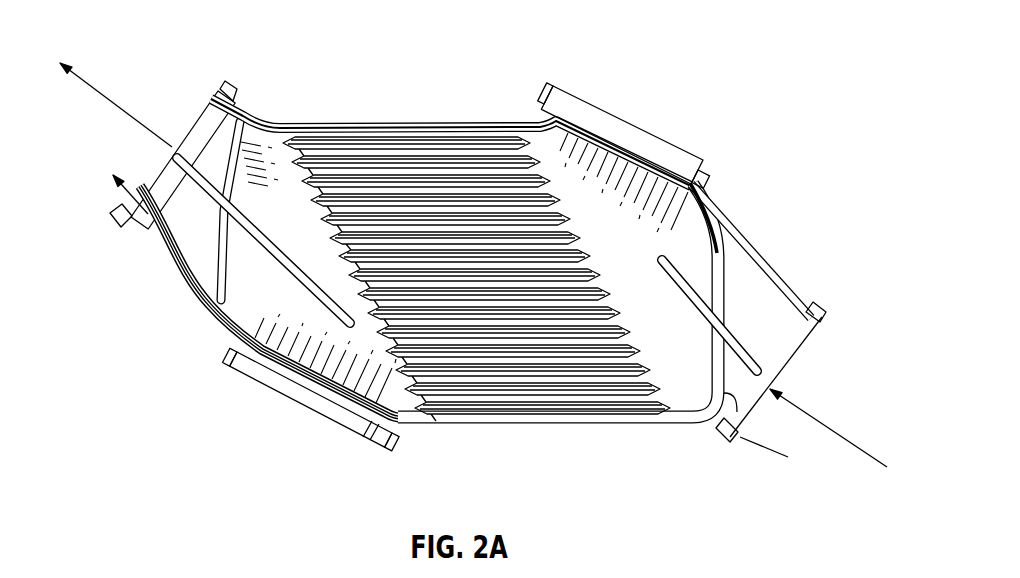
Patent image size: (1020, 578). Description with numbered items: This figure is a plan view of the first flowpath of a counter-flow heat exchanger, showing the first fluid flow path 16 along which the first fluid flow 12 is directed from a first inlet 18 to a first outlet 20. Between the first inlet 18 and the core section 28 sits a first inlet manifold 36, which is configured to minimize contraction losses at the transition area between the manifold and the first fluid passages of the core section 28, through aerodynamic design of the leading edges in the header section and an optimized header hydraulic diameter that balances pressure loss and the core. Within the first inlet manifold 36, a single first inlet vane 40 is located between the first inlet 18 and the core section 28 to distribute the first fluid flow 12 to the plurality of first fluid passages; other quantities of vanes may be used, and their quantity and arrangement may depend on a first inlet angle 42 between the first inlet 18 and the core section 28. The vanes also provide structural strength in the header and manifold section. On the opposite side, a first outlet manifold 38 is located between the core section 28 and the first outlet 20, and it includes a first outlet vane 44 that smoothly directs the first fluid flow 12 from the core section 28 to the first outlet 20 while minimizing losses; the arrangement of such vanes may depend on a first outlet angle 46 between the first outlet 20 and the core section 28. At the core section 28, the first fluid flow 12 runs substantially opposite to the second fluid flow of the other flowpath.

The first fluid flow 12 is at (120, 106).
The first fluid flow path 16 is at (643, 226).
The first inlet 18 is at (752, 418).
The first outlet 20 is at (191, 109).
The core section 28 is at (437, 147).
The first inlet manifold 36 is at (686, 272).
The first outlet manifold 38 is at (273, 323).
The first inlet vane 40 is at (663, 300).
The first inlet angle 42 is at (707, 418).
The first outlet vane 44 is at (250, 247).
The first outlet angle 46 is at (243, 122).